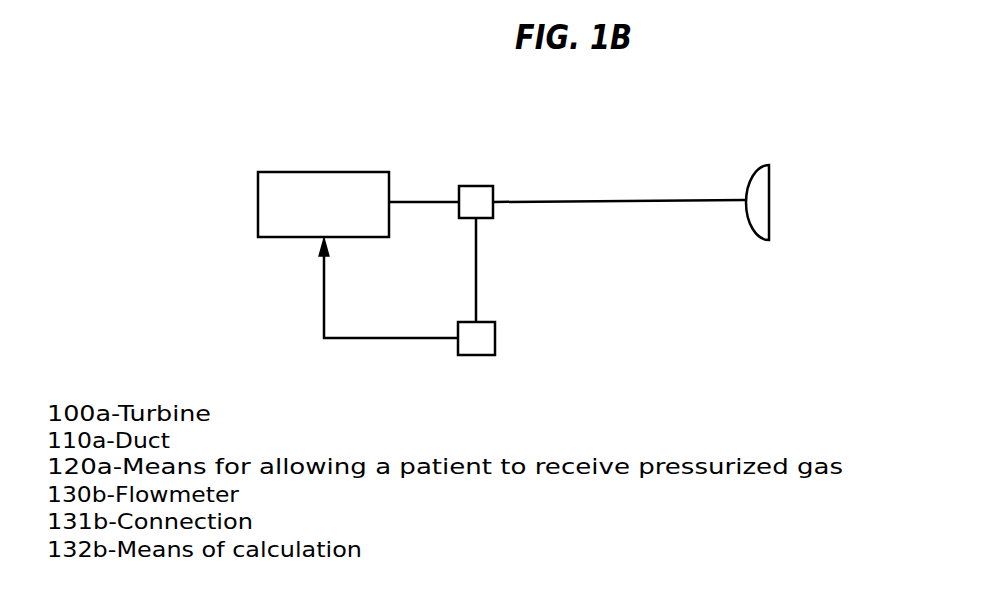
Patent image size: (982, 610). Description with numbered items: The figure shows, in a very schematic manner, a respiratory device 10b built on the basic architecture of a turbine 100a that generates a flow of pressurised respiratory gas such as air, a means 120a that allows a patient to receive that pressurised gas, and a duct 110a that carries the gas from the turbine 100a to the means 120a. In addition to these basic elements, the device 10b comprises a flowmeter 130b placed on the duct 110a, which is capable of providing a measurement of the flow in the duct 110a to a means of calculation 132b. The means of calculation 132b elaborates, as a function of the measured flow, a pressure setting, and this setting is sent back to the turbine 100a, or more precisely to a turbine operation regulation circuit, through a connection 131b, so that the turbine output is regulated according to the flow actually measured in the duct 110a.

The device 10b is at (592, 129).
The turbine 100a is at (320, 170).
The duct 110a is at (562, 205).
The means allowing a patient to receive pressurised gas 120a is at (773, 193).
The flowmeter 130b is at (473, 185).
The connection 131b is at (374, 342).
The means of calculation 132b is at (472, 355).